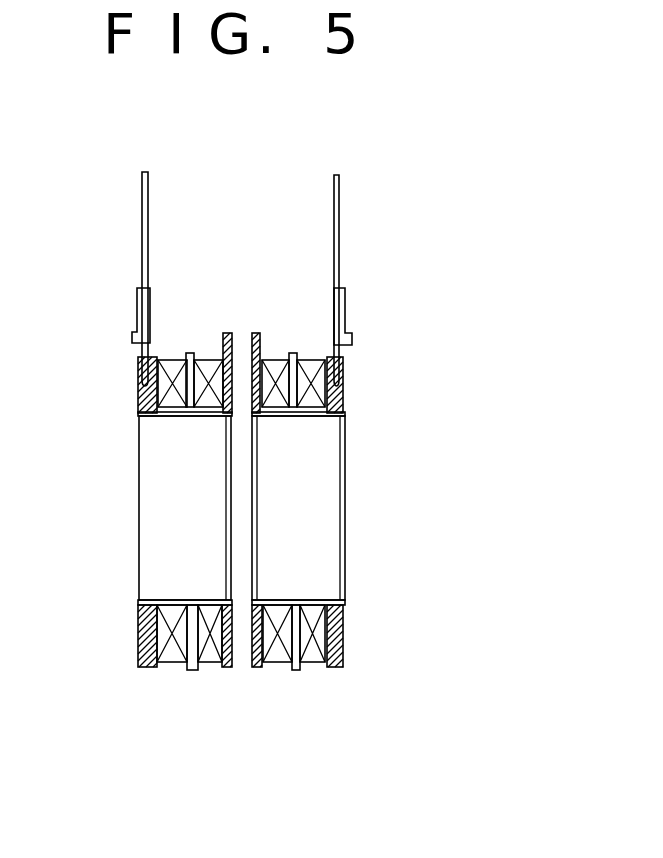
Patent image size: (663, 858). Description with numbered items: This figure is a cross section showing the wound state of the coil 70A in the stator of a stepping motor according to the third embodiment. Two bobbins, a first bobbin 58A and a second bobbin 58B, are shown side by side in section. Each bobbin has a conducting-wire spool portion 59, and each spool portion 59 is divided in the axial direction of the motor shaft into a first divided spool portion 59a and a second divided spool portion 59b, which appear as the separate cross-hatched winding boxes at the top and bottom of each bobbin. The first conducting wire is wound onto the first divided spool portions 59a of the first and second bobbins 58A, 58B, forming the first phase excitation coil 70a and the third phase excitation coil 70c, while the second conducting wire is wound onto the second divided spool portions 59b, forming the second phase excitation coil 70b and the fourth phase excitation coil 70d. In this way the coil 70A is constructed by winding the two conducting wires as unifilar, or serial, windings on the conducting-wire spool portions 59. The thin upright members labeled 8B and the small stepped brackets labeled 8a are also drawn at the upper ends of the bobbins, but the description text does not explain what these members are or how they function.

The guide rail 8B is at (136, 230).
The engaging portion 8a is at (130, 313).
The first bobbin 58A is at (350, 380).
The second bobbin 58B is at (132, 385).
The coil 70A is at (300, 350).
The first phase excitation coil 70a is at (272, 418).
The second phase excitation coil 70b is at (310, 418).
The third phase excitation coil 70c is at (163, 418).
The fourth phase excitation coil 70d is at (198, 418).
The conducting-wire spool portion 59 is at (73, 625).
The first divided spool portion 59a is at (158, 622).
The second divided spool portion 59b is at (163, 660).